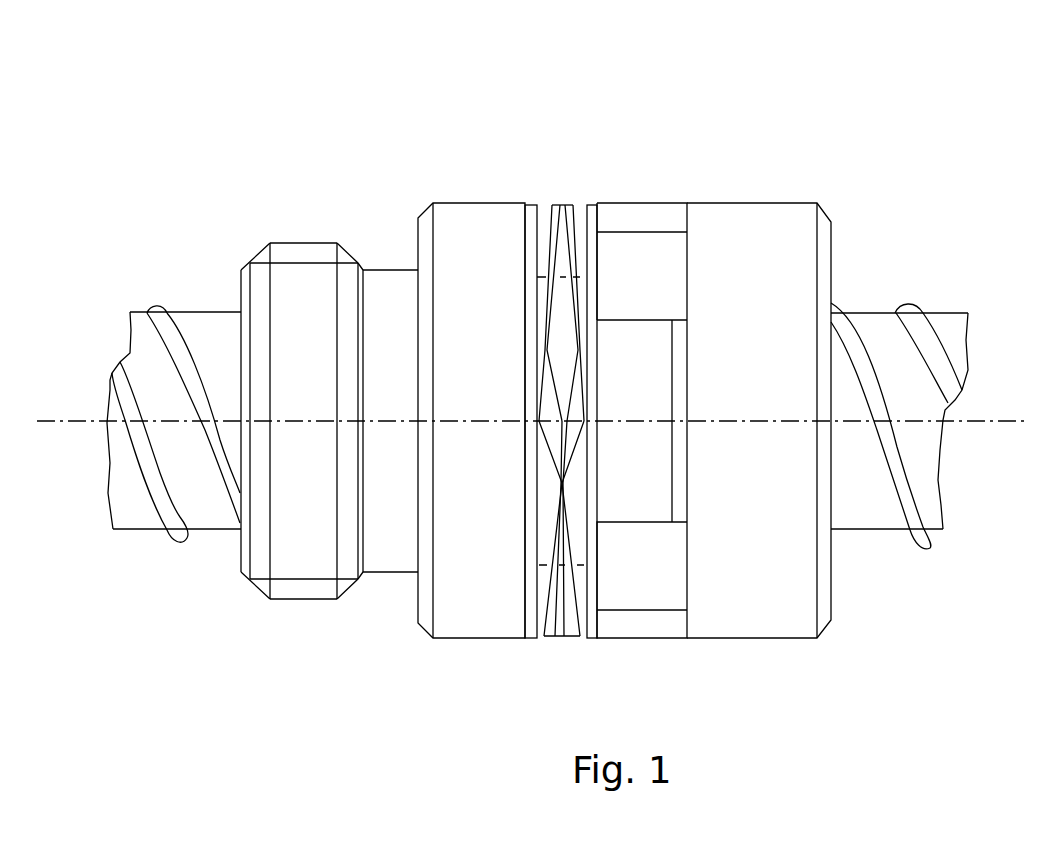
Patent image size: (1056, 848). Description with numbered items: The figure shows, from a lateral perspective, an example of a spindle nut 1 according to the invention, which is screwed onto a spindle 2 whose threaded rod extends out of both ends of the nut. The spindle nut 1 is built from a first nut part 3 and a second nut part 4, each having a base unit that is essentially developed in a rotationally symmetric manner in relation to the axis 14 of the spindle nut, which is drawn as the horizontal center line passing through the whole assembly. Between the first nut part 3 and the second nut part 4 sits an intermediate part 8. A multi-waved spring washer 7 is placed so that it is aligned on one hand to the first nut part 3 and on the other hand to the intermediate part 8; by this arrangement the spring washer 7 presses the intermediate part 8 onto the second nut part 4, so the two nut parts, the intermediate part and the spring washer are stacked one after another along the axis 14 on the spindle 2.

The spindle nut 1 is at (695, 102).
The spindle 2 is at (908, 302).
The first nut part 3 is at (472, 215).
The second nut part 4 is at (742, 215).
The multi-waved spring washer 7 is at (555, 212).
The intermediate part 8 is at (637, 215).
The axis 14 is at (1000, 421).